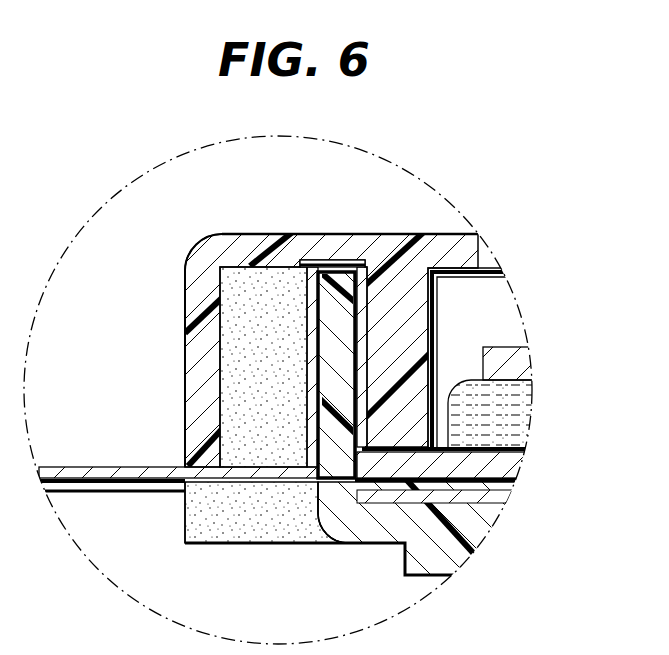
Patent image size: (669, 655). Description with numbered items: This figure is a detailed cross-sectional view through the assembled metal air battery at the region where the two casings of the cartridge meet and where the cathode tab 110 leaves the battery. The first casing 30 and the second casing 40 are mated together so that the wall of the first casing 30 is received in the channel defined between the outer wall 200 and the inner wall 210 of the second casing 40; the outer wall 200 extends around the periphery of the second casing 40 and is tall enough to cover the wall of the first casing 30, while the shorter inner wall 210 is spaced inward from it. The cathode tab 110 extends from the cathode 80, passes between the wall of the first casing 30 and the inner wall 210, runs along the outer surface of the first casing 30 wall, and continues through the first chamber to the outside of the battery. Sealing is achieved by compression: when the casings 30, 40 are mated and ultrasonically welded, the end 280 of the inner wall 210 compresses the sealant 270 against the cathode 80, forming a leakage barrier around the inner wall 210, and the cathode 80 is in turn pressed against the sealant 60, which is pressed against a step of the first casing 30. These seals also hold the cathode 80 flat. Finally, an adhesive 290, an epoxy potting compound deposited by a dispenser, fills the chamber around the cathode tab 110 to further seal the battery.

The first casing 30 is at (478, 528).
The second casing 40 is at (410, 270).
The sealant 60 is at (394, 458).
The cathode 80 is at (492, 449).
The cathode tab 110 is at (334, 256).
The outer wall 200 is at (198, 358).
The inner wall 210 is at (413, 325).
The sealant 270 is at (394, 458).
The end of the inner wall 280 is at (414, 452).
The adhesive 290 is at (262, 378).